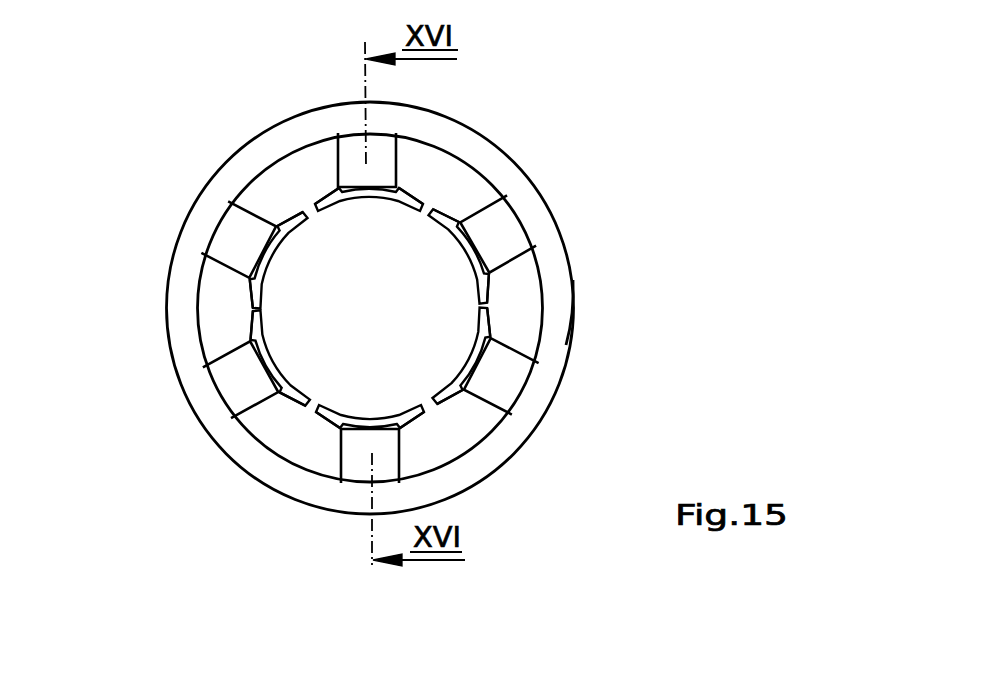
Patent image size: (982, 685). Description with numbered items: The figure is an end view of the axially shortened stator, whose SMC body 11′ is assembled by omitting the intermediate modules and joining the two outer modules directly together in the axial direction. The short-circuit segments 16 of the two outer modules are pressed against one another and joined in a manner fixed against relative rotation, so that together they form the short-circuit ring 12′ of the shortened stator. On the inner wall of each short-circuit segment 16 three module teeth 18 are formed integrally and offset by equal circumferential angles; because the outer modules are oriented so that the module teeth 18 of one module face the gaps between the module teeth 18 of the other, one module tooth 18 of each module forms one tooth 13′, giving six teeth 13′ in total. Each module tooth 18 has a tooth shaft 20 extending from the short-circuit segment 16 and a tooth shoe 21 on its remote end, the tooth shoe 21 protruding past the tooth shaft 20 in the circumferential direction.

The SMC body 11′ is at (516, 158).
The short-circuit ring 12′ is at (567, 243).
The tooth 13′ is at (510, 266).
The short-circuit segment 16 is at (553, 268).
The module tooth 18 is at (401, 185).
The tooth shaft 20 is at (352, 158).
The tooth shoe 21 is at (272, 262).